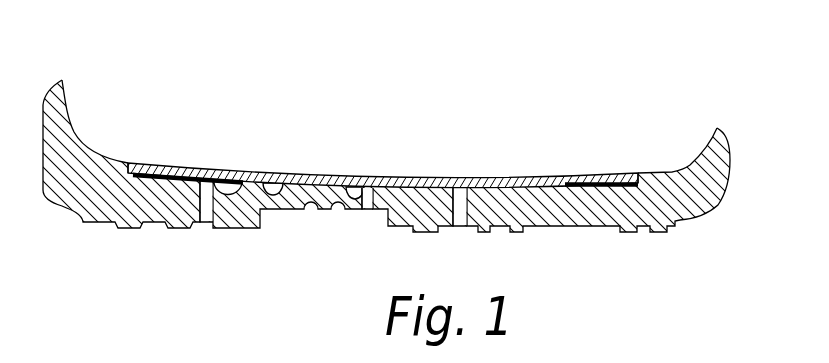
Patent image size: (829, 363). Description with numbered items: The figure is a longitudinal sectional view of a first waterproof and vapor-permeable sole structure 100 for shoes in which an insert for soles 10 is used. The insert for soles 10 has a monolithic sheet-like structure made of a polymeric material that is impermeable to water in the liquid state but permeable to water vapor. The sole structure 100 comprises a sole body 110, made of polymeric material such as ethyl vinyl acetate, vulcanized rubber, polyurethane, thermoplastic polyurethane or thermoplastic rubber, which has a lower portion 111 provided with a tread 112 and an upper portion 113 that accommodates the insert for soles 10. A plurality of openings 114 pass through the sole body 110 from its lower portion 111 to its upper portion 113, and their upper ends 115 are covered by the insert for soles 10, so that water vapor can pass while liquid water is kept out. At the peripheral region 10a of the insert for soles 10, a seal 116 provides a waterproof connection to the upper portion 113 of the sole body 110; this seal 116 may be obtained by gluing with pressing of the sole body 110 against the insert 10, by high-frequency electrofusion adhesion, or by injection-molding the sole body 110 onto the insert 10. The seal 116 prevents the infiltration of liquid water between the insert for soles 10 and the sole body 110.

The insert for soles 10 is at (430, 177).
The peripheral region of the insert for soles 10a is at (173, 171).
The first sole structure 100 is at (414, 181).
The sole body 110 is at (730, 159).
The lower portion 111 is at (680, 218).
The tread 112 is at (488, 228).
The upper portion 113 is at (650, 172).
The openings 114 is at (462, 210).
The upper ends 115 is at (341, 187).
The seal 116 is at (158, 176).